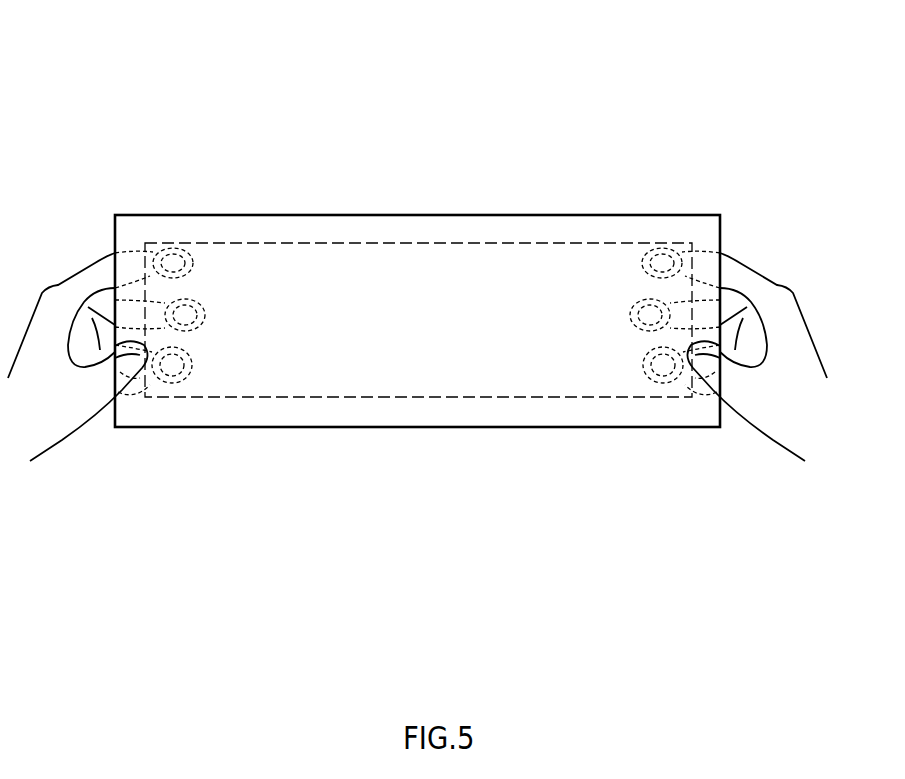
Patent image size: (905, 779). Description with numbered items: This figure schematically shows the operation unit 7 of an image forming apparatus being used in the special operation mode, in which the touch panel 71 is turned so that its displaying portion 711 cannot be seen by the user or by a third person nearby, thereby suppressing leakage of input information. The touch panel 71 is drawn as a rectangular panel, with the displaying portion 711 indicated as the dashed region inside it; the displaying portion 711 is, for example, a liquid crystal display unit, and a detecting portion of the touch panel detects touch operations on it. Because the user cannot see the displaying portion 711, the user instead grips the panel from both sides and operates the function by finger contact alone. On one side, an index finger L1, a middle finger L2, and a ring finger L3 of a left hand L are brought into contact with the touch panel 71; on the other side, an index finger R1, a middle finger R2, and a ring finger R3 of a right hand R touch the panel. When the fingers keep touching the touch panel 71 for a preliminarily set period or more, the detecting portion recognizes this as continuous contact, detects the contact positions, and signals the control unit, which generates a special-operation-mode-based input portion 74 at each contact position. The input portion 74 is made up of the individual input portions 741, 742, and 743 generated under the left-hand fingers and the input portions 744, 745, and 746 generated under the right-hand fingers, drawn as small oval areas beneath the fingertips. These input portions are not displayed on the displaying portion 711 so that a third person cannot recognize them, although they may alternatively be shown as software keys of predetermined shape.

The operation unit 7 is at (118, 106).
The touch panel 71 is at (390, 214).
The displaying portion 711 is at (462, 243).
The special-operation-mode-based input portion 74 is at (221, 264).
The special-operation-mode-based input portion 741 is at (205, 250).
The special-operation-mode-based input portion 742 is at (213, 315).
The special-operation-mode-based input portion 743 is at (178, 387).
The special-operation-mode-based input portion 744 is at (630, 255).
The special-operation-mode-based input portion 745 is at (622, 315).
The special-operation-mode-based input portion 746 is at (655, 395).
The left hand L is at (58, 291).
The index finger L1 is at (133, 240).
The middle finger L2 is at (185, 292).
The ring finger L3 is at (183, 345).
The right hand R is at (777, 291).
The index finger R1 is at (704, 240).
The middle finger R2 is at (645, 291).
The ring finger R3 is at (652, 345).